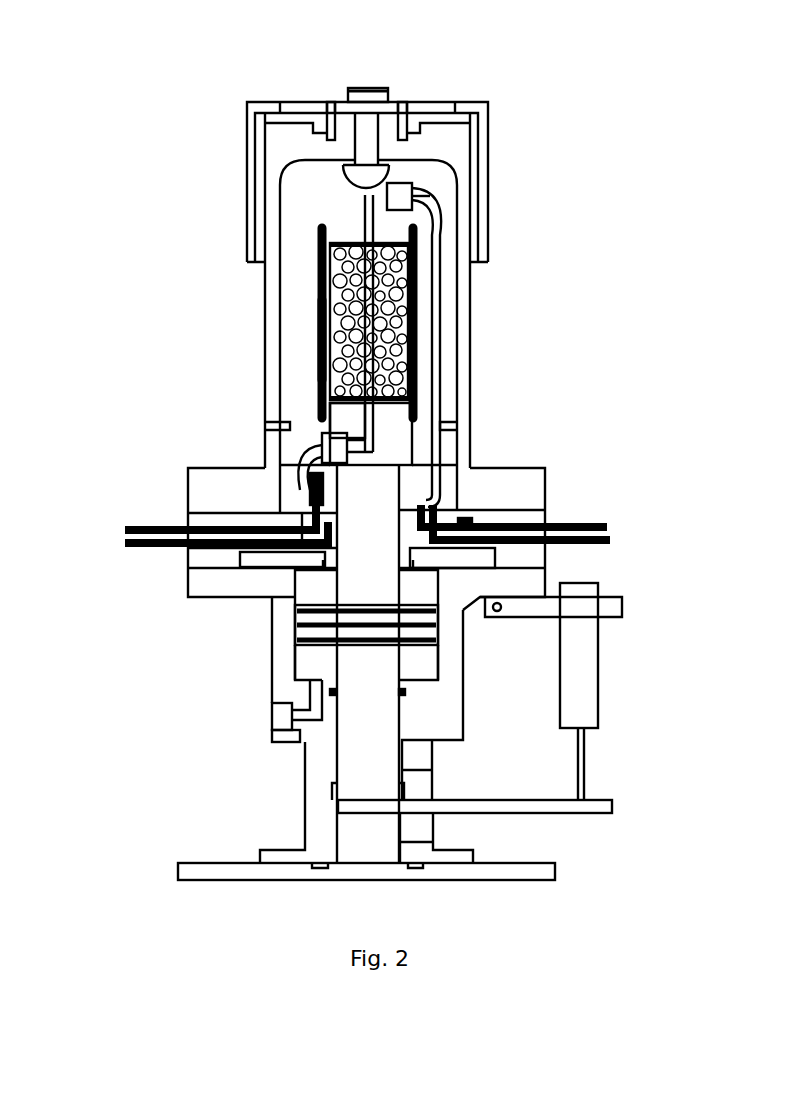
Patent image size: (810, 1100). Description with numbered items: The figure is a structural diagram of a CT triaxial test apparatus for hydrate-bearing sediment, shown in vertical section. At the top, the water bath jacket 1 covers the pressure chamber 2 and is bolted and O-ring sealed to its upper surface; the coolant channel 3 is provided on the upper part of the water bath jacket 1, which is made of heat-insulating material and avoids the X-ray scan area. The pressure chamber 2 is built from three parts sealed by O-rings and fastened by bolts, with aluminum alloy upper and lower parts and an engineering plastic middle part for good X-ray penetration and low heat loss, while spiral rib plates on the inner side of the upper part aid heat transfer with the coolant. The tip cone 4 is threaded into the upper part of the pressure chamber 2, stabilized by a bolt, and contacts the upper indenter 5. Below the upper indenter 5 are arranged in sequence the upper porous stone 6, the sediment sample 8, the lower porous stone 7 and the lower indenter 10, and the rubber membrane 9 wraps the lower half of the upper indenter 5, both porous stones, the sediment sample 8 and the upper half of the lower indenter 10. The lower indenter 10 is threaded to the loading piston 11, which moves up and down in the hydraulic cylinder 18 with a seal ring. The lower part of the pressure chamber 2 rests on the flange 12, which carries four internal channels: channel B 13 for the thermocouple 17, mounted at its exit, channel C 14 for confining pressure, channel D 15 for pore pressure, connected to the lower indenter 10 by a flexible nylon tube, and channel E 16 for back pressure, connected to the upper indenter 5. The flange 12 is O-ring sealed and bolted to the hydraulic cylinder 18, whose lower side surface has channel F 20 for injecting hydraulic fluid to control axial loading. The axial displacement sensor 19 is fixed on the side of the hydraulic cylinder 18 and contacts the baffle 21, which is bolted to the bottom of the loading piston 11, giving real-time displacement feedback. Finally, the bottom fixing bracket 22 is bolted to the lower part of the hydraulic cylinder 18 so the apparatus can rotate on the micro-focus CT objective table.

The water bath jacket 1 is at (262, 147).
The pressure chamber 2 is at (258, 277).
The coolant channel 3 is at (474, 98).
The tip cone 4 is at (392, 166).
The upper indenter 5 is at (403, 208).
The upper porous stone 6 is at (420, 246).
The lower porous stone 7 is at (421, 398).
The sediment sample 8 is at (330, 377).
The rubber membrane 9 is at (420, 278).
The lower indenter 10 is at (405, 440).
The loading piston 11 is at (362, 578).
The flange 12 is at (247, 522).
The channel B 13 is at (201, 501).
The channel C 14 is at (526, 514).
The channel D 15 is at (191, 544).
The channel E 16 is at (533, 545).
The thermocouple 17 is at (308, 488).
The hydraulic cylinder 18 is at (290, 738).
The axial displacement sensor 19 is at (578, 690).
The channel F 20 is at (268, 718).
The baffle 21 is at (580, 796).
The bottom fixing bracket 22 is at (475, 851).